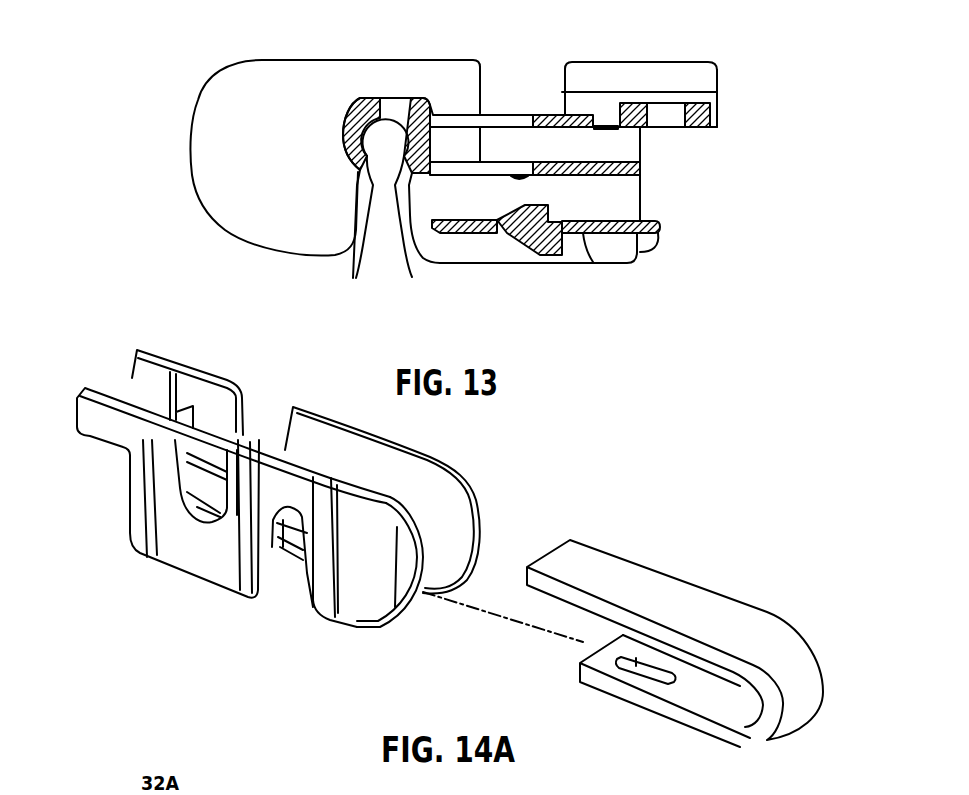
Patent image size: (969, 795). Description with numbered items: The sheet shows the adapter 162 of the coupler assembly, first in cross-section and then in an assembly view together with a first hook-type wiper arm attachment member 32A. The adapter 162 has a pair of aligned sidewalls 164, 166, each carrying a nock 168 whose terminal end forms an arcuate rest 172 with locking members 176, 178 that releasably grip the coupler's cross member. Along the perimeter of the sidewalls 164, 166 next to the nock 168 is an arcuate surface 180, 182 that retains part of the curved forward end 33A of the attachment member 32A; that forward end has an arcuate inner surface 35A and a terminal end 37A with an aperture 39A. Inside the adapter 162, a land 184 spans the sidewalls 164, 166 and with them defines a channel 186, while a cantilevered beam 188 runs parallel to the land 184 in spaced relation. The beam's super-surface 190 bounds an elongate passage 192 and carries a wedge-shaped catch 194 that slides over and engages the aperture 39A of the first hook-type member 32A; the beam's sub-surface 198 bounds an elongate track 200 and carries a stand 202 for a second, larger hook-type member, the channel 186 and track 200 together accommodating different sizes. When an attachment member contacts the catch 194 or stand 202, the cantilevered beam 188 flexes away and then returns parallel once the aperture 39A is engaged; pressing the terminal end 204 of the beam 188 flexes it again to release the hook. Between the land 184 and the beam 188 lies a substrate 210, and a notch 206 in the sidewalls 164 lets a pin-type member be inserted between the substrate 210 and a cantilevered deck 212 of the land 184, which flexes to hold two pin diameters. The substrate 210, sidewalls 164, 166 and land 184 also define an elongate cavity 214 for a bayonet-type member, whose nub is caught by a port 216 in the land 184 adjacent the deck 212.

In FIG. 13, the adapter 162 is at (190, 63).
In FIG. 13, the sidewall 164 is at (317, 72).
In FIG. 14A, the sidewall 164 is at (192, 560).
In FIG. 14A, the sidewall 166 is at (335, 405).
In FIG. 13, the nock 168 is at (382, 262).
In FIG. 14A, the nock 168 is at (290, 594).
In FIG. 13, the arcuate rest 172 is at (379, 116).
In FIG. 13, the locking member 176 is at (354, 230).
In FIG. 14A, the locking member 176 is at (319, 566).
In FIG. 13, the locking member 178 is at (415, 230).
In FIG. 14A, the arcuate surface 180 is at (420, 605).
In FIG. 14A, the arcuate surface 182 is at (481, 490).
In FIG. 13, the land 184 is at (717, 120).
In FIG. 14A, the land 184 is at (122, 392).
In FIG. 14A, the channel 186 is at (106, 382).
In FIG. 13, the cantilevered beam 188 is at (650, 253).
In FIG. 13, the super-surface 190 is at (656, 220).
In FIG. 13, the elongate passage 192 is at (650, 193).
In FIG. 13, the catch 194 is at (562, 215).
In FIG. 13, the sub-surface 198 is at (612, 266).
In FIG. 13, the elongate track 200 is at (641, 264).
In FIG. 13, the stand 202 is at (549, 257).
In FIG. 13, the terminal end 204 is at (658, 233).
In FIG. 13, the notch 206 is at (491, 78).
In FIG. 14A, the notch 206 is at (181, 516).
In FIG. 13, the substrate 210 is at (635, 170).
In FIG. 14A, the substrate 210 is at (200, 473).
In FIG. 13, the deck 212 is at (542, 114).
In FIG. 14A, the deck 212 is at (207, 438).
In FIG. 13, the elongate cavity 214 is at (652, 143).
In FIG. 13, the port 216 is at (665, 99).
In FIG. 14A, the port 216 is at (155, 412).
In FIG. 14A, the first hook-type wiper arm attachment member 32A is at (770, 578).
In FIG. 14A, the curved forward end 33A is at (798, 707).
In FIG. 14A, the arcuate inner surface 35A is at (760, 742).
In FIG. 14A, the terminal end 37A is at (587, 688).
In FIG. 14A, the aperture 39A is at (653, 672).